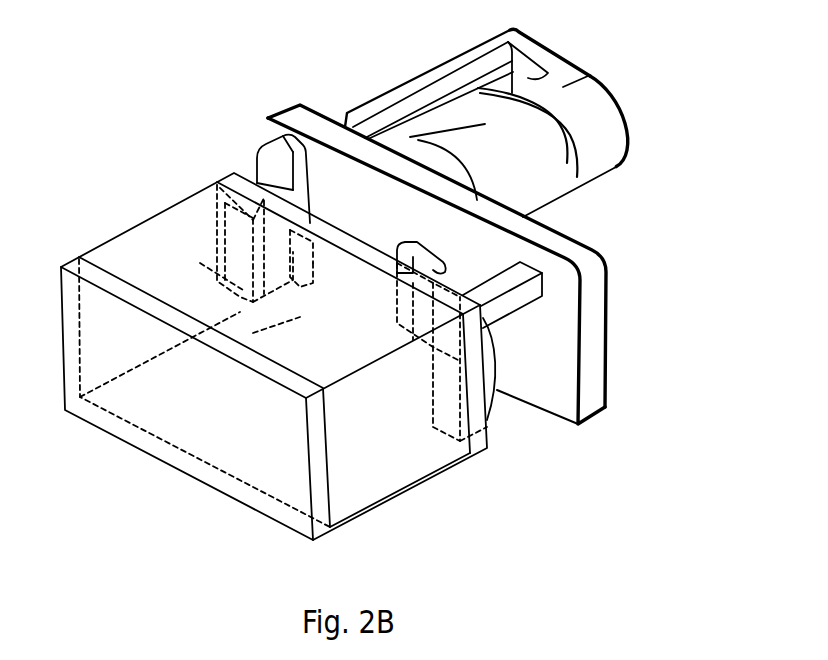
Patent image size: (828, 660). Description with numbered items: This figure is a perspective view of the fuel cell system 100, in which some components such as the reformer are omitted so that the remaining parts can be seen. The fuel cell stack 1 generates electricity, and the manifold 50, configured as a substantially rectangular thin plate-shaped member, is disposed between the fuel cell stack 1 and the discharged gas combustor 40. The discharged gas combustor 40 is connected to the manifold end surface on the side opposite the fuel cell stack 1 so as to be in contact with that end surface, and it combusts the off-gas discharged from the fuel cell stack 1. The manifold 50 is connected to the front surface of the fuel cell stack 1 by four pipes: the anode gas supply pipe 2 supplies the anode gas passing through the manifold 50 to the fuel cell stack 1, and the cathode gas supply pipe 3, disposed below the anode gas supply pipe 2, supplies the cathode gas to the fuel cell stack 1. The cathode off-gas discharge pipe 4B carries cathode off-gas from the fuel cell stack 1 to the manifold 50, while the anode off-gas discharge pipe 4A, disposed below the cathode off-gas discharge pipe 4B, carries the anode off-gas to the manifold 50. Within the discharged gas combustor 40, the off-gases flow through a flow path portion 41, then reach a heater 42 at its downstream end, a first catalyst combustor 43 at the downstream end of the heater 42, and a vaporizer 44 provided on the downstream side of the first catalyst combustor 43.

The fuel cell system 100 is at (133, 113).
The fuel cell stack 1 is at (413, 472).
The anode gas supply pipe 2 is at (520, 307).
The cathode gas supply pipe 3 is at (445, 270).
The anode off-gas discharge pipe 4A is at (243, 298).
The cathode off-gas discharge pipe 4B is at (257, 183).
The discharged gas combustor 40 is at (709, 18).
The flow path portion 41 is at (545, 62).
The heater 42 is at (547, 110).
The first catalyst combustor 43 is at (538, 143).
The vaporizer 44 is at (447, 172).
The manifold 50 is at (315, 118).